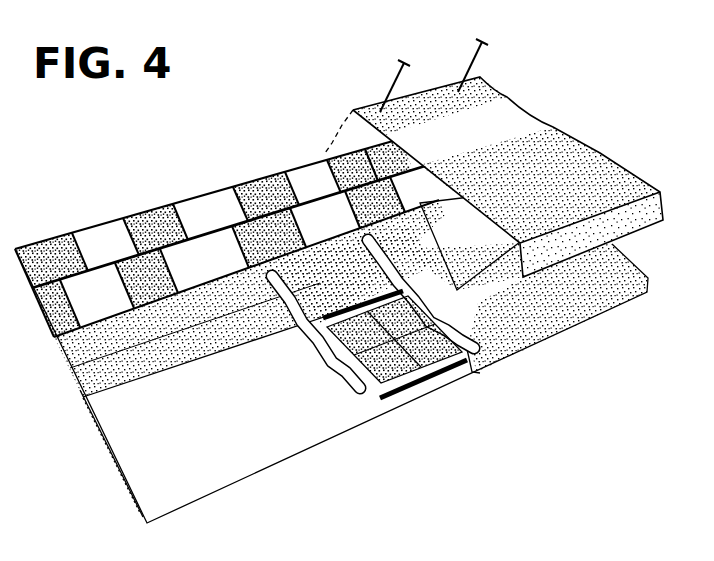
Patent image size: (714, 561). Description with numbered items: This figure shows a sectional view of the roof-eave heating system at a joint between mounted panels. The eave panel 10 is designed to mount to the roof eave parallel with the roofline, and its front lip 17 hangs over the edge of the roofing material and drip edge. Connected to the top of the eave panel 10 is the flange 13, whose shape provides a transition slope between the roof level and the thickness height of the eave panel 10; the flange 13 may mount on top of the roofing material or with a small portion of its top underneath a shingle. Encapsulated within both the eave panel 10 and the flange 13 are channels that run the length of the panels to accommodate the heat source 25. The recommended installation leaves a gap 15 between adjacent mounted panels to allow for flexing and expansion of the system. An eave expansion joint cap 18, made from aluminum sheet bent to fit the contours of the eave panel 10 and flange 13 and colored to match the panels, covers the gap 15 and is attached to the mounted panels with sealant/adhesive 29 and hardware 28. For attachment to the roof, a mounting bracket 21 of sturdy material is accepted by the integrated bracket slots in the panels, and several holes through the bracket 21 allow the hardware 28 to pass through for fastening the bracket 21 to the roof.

The eave panel 10 is at (244, 432).
The flange 13 is at (130, 372).
The gap 15 is at (335, 270).
The front lip 17 is at (140, 517).
The eave expansion joint cap 18 is at (567, 153).
The mounting bracket 21 is at (385, 373).
The heat source 25 is at (427, 372).
The hardware 28 is at (470, 47).
The sealant/adhesive 29 is at (343, 380).